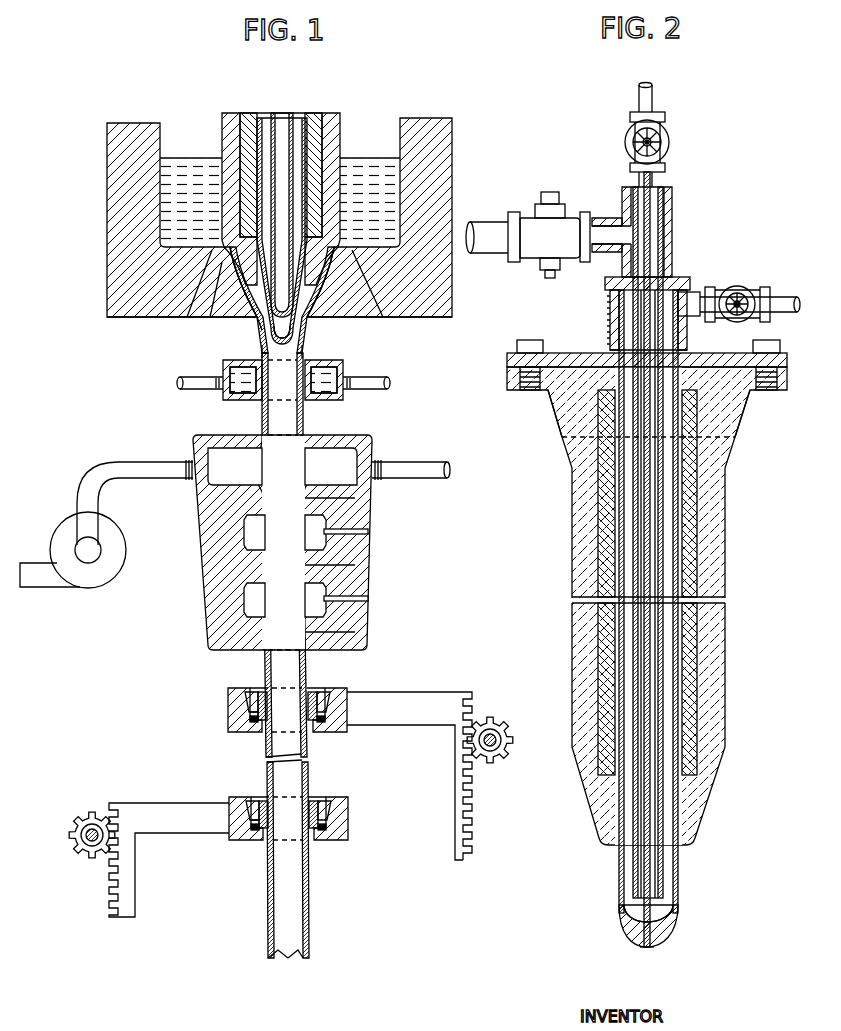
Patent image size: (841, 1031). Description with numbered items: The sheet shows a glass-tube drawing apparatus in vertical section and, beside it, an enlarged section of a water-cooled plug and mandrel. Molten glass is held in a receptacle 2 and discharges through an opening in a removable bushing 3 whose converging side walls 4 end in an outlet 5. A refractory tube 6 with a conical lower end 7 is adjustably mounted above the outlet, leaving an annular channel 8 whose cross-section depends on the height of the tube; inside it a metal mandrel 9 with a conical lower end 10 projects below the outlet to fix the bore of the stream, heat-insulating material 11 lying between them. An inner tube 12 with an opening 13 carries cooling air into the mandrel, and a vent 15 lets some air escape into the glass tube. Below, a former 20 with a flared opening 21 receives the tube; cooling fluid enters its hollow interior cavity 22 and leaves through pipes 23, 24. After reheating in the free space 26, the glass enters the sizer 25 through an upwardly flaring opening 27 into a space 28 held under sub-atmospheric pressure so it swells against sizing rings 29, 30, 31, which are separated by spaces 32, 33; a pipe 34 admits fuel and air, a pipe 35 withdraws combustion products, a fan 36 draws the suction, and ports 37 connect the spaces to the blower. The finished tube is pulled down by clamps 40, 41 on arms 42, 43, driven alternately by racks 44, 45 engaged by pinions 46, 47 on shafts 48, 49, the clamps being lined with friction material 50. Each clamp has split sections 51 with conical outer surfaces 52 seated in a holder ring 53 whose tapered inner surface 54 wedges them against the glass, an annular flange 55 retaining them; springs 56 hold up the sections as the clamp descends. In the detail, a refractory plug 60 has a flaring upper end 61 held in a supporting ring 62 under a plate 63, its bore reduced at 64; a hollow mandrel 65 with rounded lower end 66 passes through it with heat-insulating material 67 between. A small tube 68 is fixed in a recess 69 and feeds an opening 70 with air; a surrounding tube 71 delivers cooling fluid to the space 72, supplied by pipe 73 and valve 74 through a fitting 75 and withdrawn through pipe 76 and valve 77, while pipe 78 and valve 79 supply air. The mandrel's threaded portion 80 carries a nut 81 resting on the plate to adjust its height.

In FIG. 1, the receptacle 2 is at (118, 185).
In FIG. 1, the removable bushing 3 is at (200, 294).
In FIG. 1, the converging side walls 4 is at (200, 312).
In FIG. 1, the outlet 5 is at (232, 312).
In FIG. 1, the tube 6 is at (330, 130).
In FIG. 1, the conical lower end 7 is at (165, 243).
In FIG. 1, the annular channel 8 is at (208, 268).
In FIG. 1, the mandrel 9 is at (297, 118).
In FIG. 1, the conical lower end 10 is at (292, 341).
In FIG. 1, the heat-insulating material 11 is at (248, 133).
In FIG. 1, the inner tube 12 is at (279, 117).
In FIG. 1, the opening 13 is at (312, 320).
In FIG. 1, the vent 15 is at (305, 356).
In FIG. 1, the former 20 is at (223, 366).
In FIG. 1, the flared opening 21 is at (343, 366).
In FIG. 1, the hollow interior cavity 22 is at (235, 386).
In FIG. 1, the pipe 23 is at (190, 384).
In FIG. 1, the pipe 24 is at (376, 384).
In FIG. 1, the sizer 25 is at (215, 572).
In FIG. 1, the free space 26 is at (254, 655).
In FIG. 1, the upwardly flaring opening 27 is at (305, 432).
In FIG. 1, the space 28 is at (340, 455).
In FIG. 1, the sizing ring 29 is at (312, 505).
In FIG. 1, the sizing ring 30 is at (312, 558).
In FIG. 1, the sizing ring 31 is at (310, 622).
In FIG. 1, the space 32 is at (255, 531).
In FIG. 1, the space 33 is at (255, 598).
In FIG. 1, the pipe 34 is at (417, 478).
In FIG. 1, the pipe 35 is at (145, 470).
In FIG. 1, the fan 36 is at (60, 540).
In FIG. 1, the ports 37 is at (365, 531).
In FIG. 1, the clamp 40 is at (348, 703).
In FIG. 1, the clamp 41 is at (348, 810).
In FIG. 1, the arm 42 is at (430, 694).
In FIG. 1, the arm 43 is at (175, 805).
In FIG. 1, the rack 44 is at (468, 797).
In FIG. 1, the rack 45 is at (112, 880).
In FIG. 1, the pinion 46 is at (512, 740).
In FIG. 1, the pinion 47 is at (70, 835).
In FIG. 1, the shaft 48 is at (490, 735).
In FIG. 1, the shaft 49 is at (90, 816).
In FIG. 1, the friction material 50 is at (313, 693).
In FIG. 1, the split sections 51 is at (327, 700).
In FIG. 1, the conical outer surfaces 52 is at (255, 693).
In FIG. 1, the holder ring 53 is at (235, 712).
In FIG. 1, the conically tapered inner surface 54 is at (240, 705).
In FIG. 1, the annular flange 55 is at (322, 725).
In FIG. 1, the spring 56 is at (345, 721).
In FIG. 2, the refractory plug 60 is at (722, 540).
In FIG. 2, the flaring upper end 61 is at (712, 406).
In FIG. 2, the supporting ring 62 is at (745, 400).
In FIG. 2, the plate 63 is at (560, 355).
In FIG. 2, the reduced-diameter portion 64 is at (680, 790).
In FIG. 2, the hollow mandrel 65 is at (675, 641).
In FIG. 2, the rounded lower end 66 is at (665, 930).
In FIG. 2, the heat-insulating material 67 is at (690, 486).
In FIG. 2, the small tube 68 is at (655, 713).
In FIG. 2, the recess 69 is at (635, 928).
In FIG. 2, the small opening 70 is at (648, 948).
In FIG. 2, the tube 71 is at (660, 683).
In FIG. 2, the space 72 is at (668, 818).
In FIG. 2, the pipe 73 is at (485, 222).
In FIG. 2, the valve 74 is at (530, 245).
In FIG. 2, the fitting 75 is at (672, 228).
In FIG. 2, the pipe 76 is at (700, 296).
In FIG. 2, the valve 77 is at (738, 288).
In FIG. 2, the pipe 78 is at (652, 95).
In FIG. 2, the valve 79 is at (668, 142).
In FIG. 2, the screw-threaded portion 80 is at (618, 305).
In FIG. 2, the nut 81 is at (608, 336).